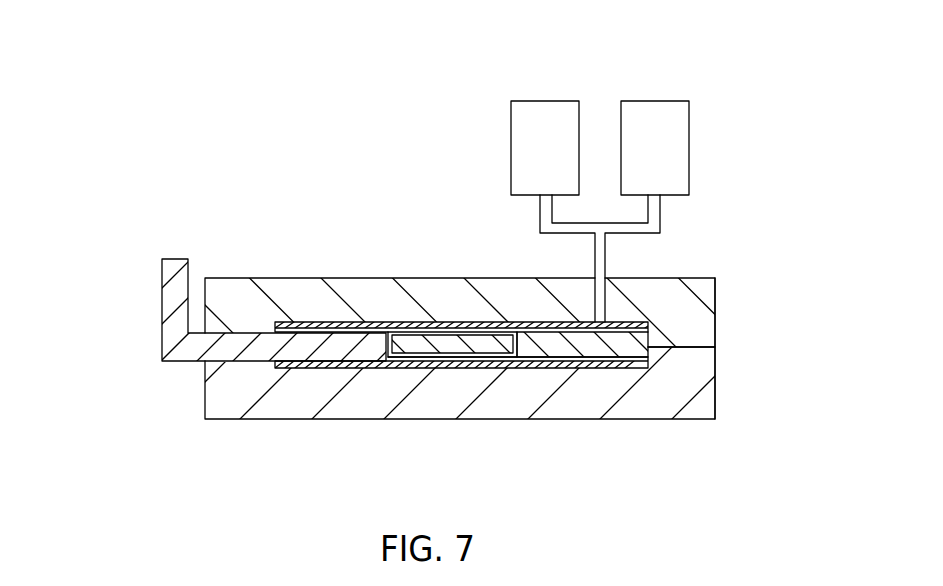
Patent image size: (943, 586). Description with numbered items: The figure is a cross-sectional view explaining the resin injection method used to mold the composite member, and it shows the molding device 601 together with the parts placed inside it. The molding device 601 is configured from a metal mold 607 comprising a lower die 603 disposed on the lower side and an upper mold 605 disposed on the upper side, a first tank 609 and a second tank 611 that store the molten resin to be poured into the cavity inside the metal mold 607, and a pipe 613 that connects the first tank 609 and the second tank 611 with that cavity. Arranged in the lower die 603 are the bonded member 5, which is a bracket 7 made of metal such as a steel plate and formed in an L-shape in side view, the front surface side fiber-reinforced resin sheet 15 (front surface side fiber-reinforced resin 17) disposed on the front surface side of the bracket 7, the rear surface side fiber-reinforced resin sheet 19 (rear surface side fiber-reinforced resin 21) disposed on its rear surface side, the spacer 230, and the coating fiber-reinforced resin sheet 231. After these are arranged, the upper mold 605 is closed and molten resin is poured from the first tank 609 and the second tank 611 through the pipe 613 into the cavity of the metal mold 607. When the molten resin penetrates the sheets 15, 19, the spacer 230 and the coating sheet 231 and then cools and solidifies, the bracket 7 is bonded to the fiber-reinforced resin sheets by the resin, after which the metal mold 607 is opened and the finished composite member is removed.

The molding device 601 is at (282, 104).
The bonded member 5 is at (284, 310).
The bracket 7 is at (165, 298).
The front surface side fiber-reinforced resin sheet 15 is at (465, 279).
The front surface side fiber-reinforced resin 17 is at (313, 327).
The rear surface side fiber-reinforced resin sheet 19 is at (461, 422).
The rear surface side fiber-reinforced resin 21 is at (323, 368).
The spacer 230 is at (405, 342).
The coating fiber-reinforced resin sheet 231 is at (458, 327).
The lower die 603 is at (446, 419).
The upper mold 605 is at (497, 283).
The metal mold 607 is at (724, 285).
The first tank 609 is at (548, 100).
The second tank 611 is at (655, 100).
The pipe 613 is at (660, 220).